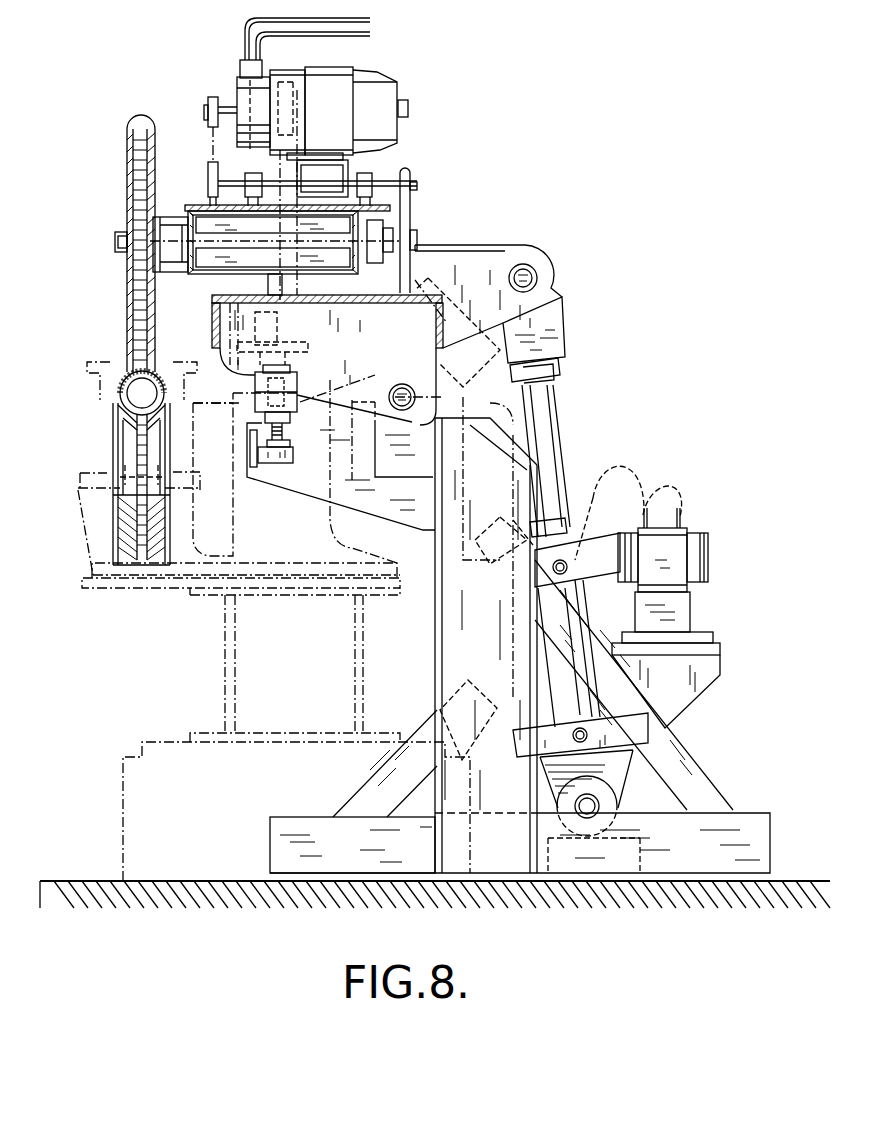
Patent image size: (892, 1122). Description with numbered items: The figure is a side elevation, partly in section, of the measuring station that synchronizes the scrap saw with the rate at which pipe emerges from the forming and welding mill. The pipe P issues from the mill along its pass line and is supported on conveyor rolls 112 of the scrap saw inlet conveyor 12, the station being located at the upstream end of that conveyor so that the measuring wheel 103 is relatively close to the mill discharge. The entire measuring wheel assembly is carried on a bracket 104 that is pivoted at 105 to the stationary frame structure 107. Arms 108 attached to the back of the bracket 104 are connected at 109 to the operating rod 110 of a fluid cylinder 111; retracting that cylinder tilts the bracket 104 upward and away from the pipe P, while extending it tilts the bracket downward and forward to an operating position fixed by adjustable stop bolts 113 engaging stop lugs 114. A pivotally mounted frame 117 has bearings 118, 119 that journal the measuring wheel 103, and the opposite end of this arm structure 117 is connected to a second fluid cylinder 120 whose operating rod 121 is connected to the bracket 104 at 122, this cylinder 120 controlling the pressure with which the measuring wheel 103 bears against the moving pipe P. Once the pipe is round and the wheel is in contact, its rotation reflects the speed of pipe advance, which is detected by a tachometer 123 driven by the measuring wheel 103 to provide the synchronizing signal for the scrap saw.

The scrap saw inlet conveyor 12 is at (218, 822).
The measuring wheel 103 is at (138, 180).
The bracket 104 is at (413, 355).
The pivot 105 is at (393, 392).
The stationary frame structure 107 is at (510, 492).
The arms 108 is at (482, 260).
The connection 109 is at (537, 278).
The operating rod 110 is at (553, 442).
The fluid cylinder 111 is at (545, 657).
The conveyor rolls 112 is at (113, 442).
The adjustable stop bolts 113 is at (282, 429).
The stop lugs 114 is at (278, 460).
The frame 117 is at (197, 274).
The bearing 118 is at (372, 230).
The bearing 119 is at (159, 224).
The fluid cylinder 120 is at (273, 172).
The operating rod 121 is at (275, 286).
The connection 122 is at (307, 346).
The tachometer 123 is at (366, 82).
The pipe P is at (120, 393).